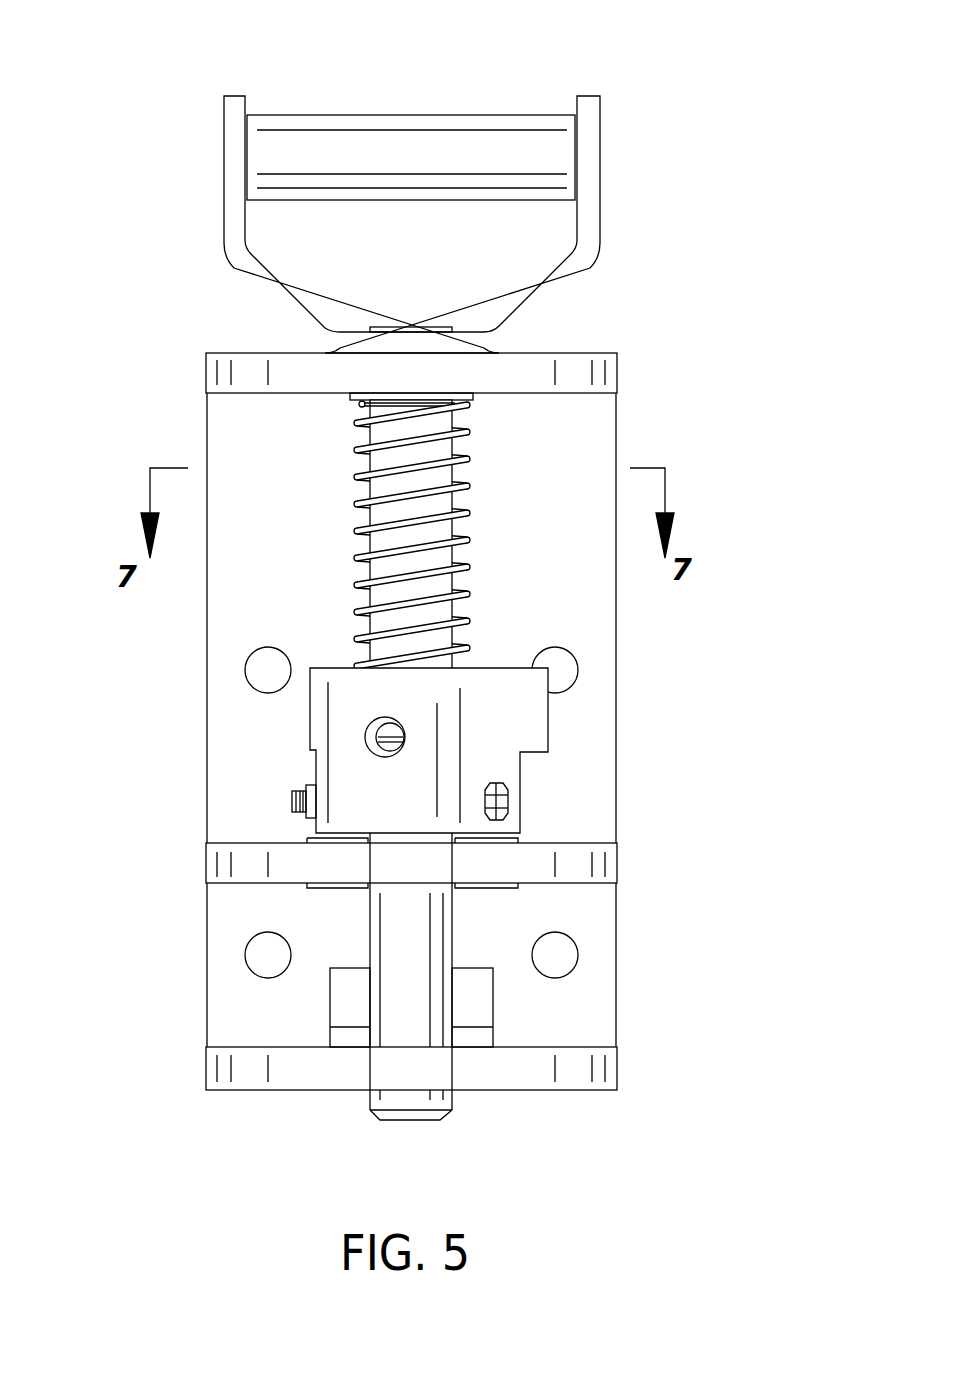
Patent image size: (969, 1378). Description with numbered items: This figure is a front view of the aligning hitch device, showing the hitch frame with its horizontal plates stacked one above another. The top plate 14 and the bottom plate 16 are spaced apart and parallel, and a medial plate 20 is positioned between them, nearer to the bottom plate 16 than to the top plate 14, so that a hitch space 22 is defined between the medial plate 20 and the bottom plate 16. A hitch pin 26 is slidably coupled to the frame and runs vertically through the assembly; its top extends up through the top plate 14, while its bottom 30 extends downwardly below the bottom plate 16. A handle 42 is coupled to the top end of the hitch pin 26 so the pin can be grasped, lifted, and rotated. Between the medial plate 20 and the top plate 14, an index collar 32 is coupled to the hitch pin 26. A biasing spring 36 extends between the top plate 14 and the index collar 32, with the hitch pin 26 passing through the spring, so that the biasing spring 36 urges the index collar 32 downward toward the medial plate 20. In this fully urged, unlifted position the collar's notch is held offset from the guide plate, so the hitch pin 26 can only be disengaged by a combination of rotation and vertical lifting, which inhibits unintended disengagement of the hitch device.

The top plate 14 is at (583, 357).
The bottom plate 16 is at (583, 1072).
The medial plate 20 is at (565, 862).
The hitch space 22 is at (268, 1002).
The hitch pin 26 is at (437, 473).
The bottom 30 is at (408, 1118).
The index collar 32 is at (513, 722).
The biasing spring 36 is at (467, 538).
The handle 42 is at (487, 127).